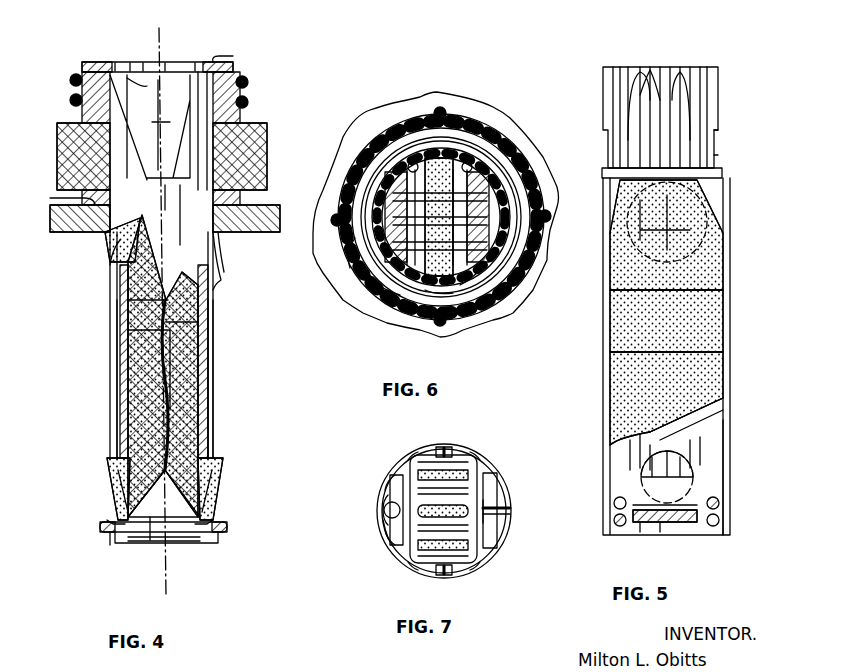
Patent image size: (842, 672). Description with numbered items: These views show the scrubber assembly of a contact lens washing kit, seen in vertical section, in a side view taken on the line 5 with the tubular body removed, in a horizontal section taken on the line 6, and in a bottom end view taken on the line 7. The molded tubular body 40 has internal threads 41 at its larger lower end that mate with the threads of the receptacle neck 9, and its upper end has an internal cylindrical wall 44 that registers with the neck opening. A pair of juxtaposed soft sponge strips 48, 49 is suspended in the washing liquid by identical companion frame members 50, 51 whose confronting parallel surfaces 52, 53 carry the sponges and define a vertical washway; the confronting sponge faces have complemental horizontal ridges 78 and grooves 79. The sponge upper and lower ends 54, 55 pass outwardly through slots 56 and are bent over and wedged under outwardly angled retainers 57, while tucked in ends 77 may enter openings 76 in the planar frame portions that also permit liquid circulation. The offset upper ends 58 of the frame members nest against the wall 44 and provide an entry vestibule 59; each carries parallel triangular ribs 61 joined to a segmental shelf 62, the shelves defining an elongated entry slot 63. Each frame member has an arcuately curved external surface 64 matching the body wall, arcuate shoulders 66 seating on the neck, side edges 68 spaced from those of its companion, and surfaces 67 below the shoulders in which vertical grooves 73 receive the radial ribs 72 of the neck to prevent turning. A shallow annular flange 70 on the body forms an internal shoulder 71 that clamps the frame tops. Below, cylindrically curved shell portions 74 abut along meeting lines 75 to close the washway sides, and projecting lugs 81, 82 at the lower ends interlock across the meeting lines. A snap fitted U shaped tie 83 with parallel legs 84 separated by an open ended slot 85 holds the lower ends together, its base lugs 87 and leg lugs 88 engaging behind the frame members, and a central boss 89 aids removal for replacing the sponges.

In FIG. 4, the bottom 5 is at (160, 42).
In FIG. 4, the front and back sides 6 is at (56, 140).
In FIG. 4, the opening 7 is at (105, 560).
In FIG. 4, the neck 9 is at (80, 212).
In FIG. 6, the neck 9 is at (492, 135).
In FIG. 4, the tubular body 40 is at (58, 157).
In FIG. 6, the tubular body 40 is at (535, 172).
In FIG. 4, the internal threads 41 is at (267, 157).
In FIG. 4, the internal cylindrical wall 44 is at (245, 83).
In FIG. 4, the soft strip 48 is at (128, 355).
In FIG. 6, the soft strip 48 is at (425, 160).
In FIG. 5, the soft strip 48 is at (700, 378).
In FIG. 4, the soft strip 49 is at (195, 380).
In FIG. 6, the soft strip 49 is at (445, 160).
In FIG. 4, the frame member 50 is at (120, 370).
In FIG. 7, the frame member 50 is at (400, 530).
In FIG. 5, the frame member 50 is at (728, 430).
In FIG. 4, the frame member 51 is at (215, 418).
In FIG. 7, the frame member 51 is at (499, 522).
In FIG. 4, the confronting parallel surface 52 is at (120, 397).
In FIG. 5, the confronting parallel surface 52 is at (700, 425).
In FIG. 4, the confronting parallel surface 53 is at (212, 400).
In FIG. 4, the upper end 54 is at (222, 250).
In FIG. 4, the lower end 55 is at (120, 487).
In FIG. 4, the slot 56 is at (83, 196).
In FIG. 5, the slot 56 is at (685, 500).
In FIG. 4, the retainer 57 is at (105, 260).
In FIG. 5, the retainer 57 is at (700, 245).
In FIG. 4, the upper end 58 is at (125, 75).
In FIG. 6, the upper end 58 is at (380, 158).
In FIG. 5, the upper end 58 is at (700, 68).
In FIG. 4, the entry vestibule 59 is at (172, 124).
In FIG. 4, the triangular rib 61 is at (137, 148).
In FIG. 6, the triangular rib 61 is at (430, 290).
In FIG. 5, the triangular rib 61 is at (676, 70).
In FIG. 4, the segmental shelf 62 is at (150, 127).
In FIG. 6, the segmental shelf 62 is at (385, 285).
In FIG. 5, the segmental shelf 62 is at (700, 165).
In FIG. 4, the entry slot 63 is at (177, 215).
In FIG. 6, the entry slot 63 is at (465, 288).
In FIG. 4, the arcuately curved external surface 64 is at (215, 62).
In FIG. 4, the arcuate shoulder 66 is at (240, 105).
In FIG. 7, the arcuate shoulder 66 is at (404, 457).
In FIG. 5, the arcuate shoulder 66 is at (718, 132).
In FIG. 4, the surface 67 is at (177, 198).
In FIG. 5, the surface 67 is at (716, 155).
In FIG. 4, the side edge 68 is at (135, 92).
In FIG. 6, the side edge 68 is at (400, 125).
In FIG. 5, the side edge 68 is at (610, 72).
In FIG. 4, the annular radial flange 70 is at (105, 62).
In FIG. 4, the internal circumferential shoulder 71 is at (115, 62).
In FIG. 6, the radial rib 72 is at (365, 205).
In FIG. 6, the vertical groove 73 is at (360, 232).
In FIG. 7, the vertical groove 73 is at (385, 512).
In FIG. 7, the shell portion 74 is at (428, 448).
In FIG. 7, the meeting line 75 is at (452, 450).
In FIG. 4, the opening 76 is at (113, 282).
In FIG. 5, the opening 76 is at (730, 315).
In FIG. 4, the tucked in end 77 is at (125, 271).
In FIG. 4, the transverse ridge 78 is at (135, 310).
In FIG. 5, the transverse ridge 78 is at (613, 287).
In FIG. 4, the groove 79 is at (135, 332).
In FIG. 5, the groove 79 is at (630, 328).
In FIG. 4, the lug 81 is at (152, 525).
In FIG. 5, the lug 81 is at (615, 502).
In FIG. 4, the lug 82 is at (183, 545).
In FIG. 7, the lug 82 is at (444, 447).
In FIG. 5, the lug 82 is at (614, 520).
In FIG. 4, the snap fitted tie 83 is at (102, 525).
In FIG. 7, the snap fitted tie 83 is at (385, 545).
In FIG. 7, the leg portion 84 is at (470, 488).
In FIG. 5, the leg portion 84 is at (690, 523).
In FIG. 7, the open ended slot 85 is at (512, 512).
In FIG. 5, the open ended slot 85 is at (670, 523).
In FIG. 7, the lug 87 is at (393, 473).
In FIG. 7, the lug 88 is at (497, 478).
In FIG. 4, the boss 89 is at (112, 545).
In FIG. 7, the boss 89 is at (384, 495).
In FIG. 5, the boss 89 is at (655, 532).